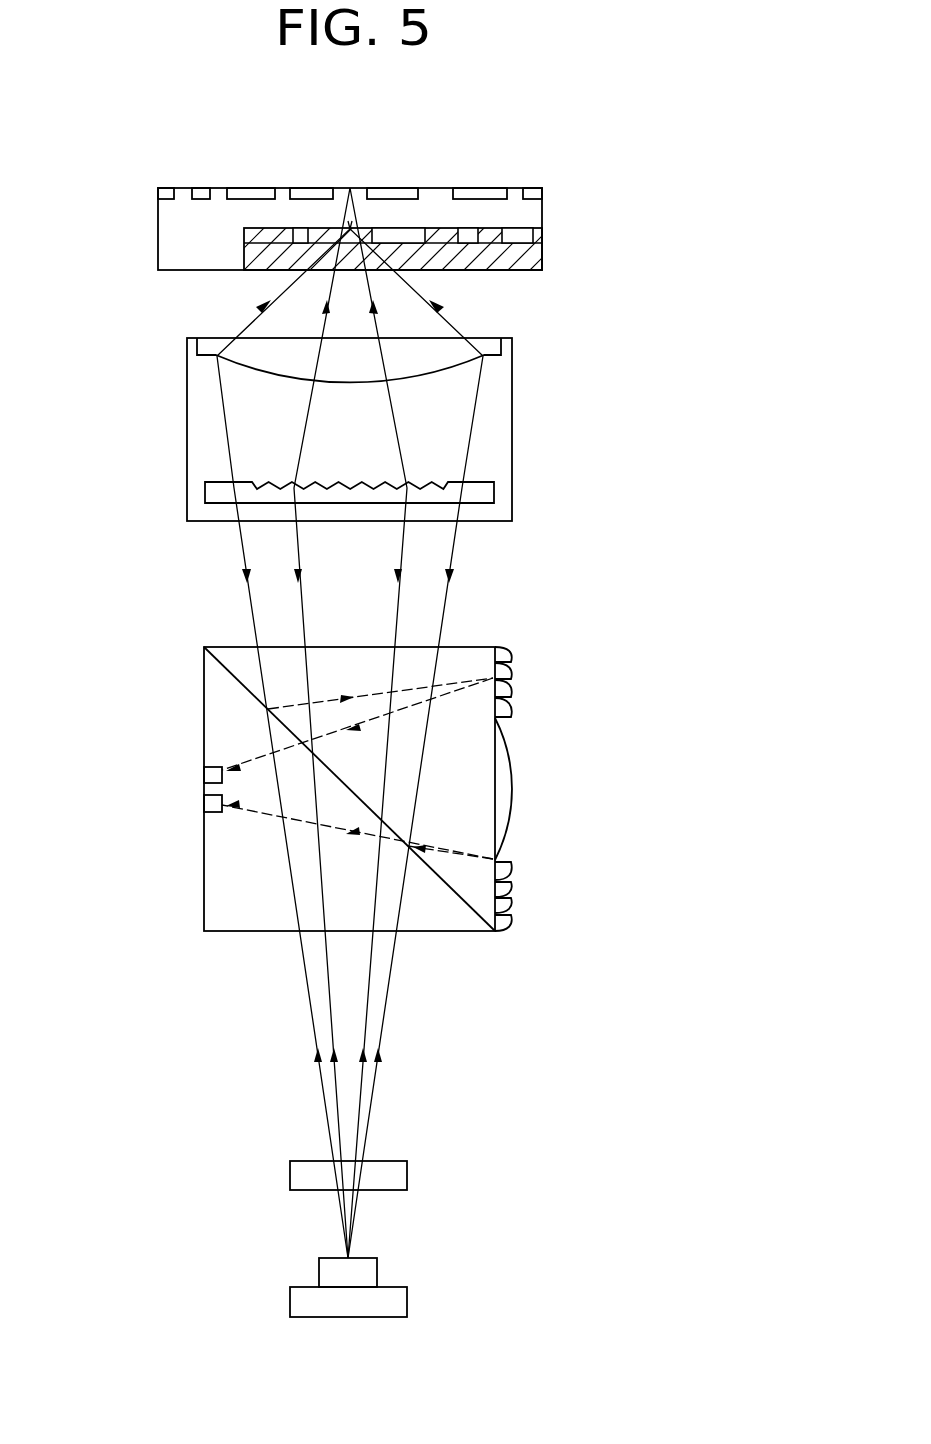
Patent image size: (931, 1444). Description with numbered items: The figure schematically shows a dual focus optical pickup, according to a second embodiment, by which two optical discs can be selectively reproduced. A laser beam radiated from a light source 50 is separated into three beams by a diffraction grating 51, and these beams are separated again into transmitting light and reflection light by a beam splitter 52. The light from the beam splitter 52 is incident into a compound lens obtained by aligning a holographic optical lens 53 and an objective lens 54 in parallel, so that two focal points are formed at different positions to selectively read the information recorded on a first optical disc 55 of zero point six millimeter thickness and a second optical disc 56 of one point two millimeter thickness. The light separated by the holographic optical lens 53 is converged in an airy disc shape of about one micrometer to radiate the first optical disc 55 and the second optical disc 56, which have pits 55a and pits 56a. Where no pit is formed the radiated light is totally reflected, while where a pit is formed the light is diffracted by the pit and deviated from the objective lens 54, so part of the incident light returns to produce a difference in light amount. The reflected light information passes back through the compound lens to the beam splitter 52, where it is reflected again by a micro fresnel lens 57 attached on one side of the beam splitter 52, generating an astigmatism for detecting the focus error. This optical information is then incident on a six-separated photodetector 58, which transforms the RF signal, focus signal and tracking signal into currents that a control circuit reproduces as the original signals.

The light source 50 is at (290, 1302).
The diffraction grating 51 is at (290, 1175).
The beam splitter 52 is at (228, 677).
The holographic optical lens 53 is at (208, 495).
The objective lens 54 is at (275, 358).
The first optical disc 55 is at (535, 257).
The pits 55a is at (520, 230).
The second optical disc 56 is at (175, 252).
The pits 56a is at (168, 192).
The micro fresnel lens 57 is at (512, 787).
The 6-separated photodetector 58 is at (212, 805).